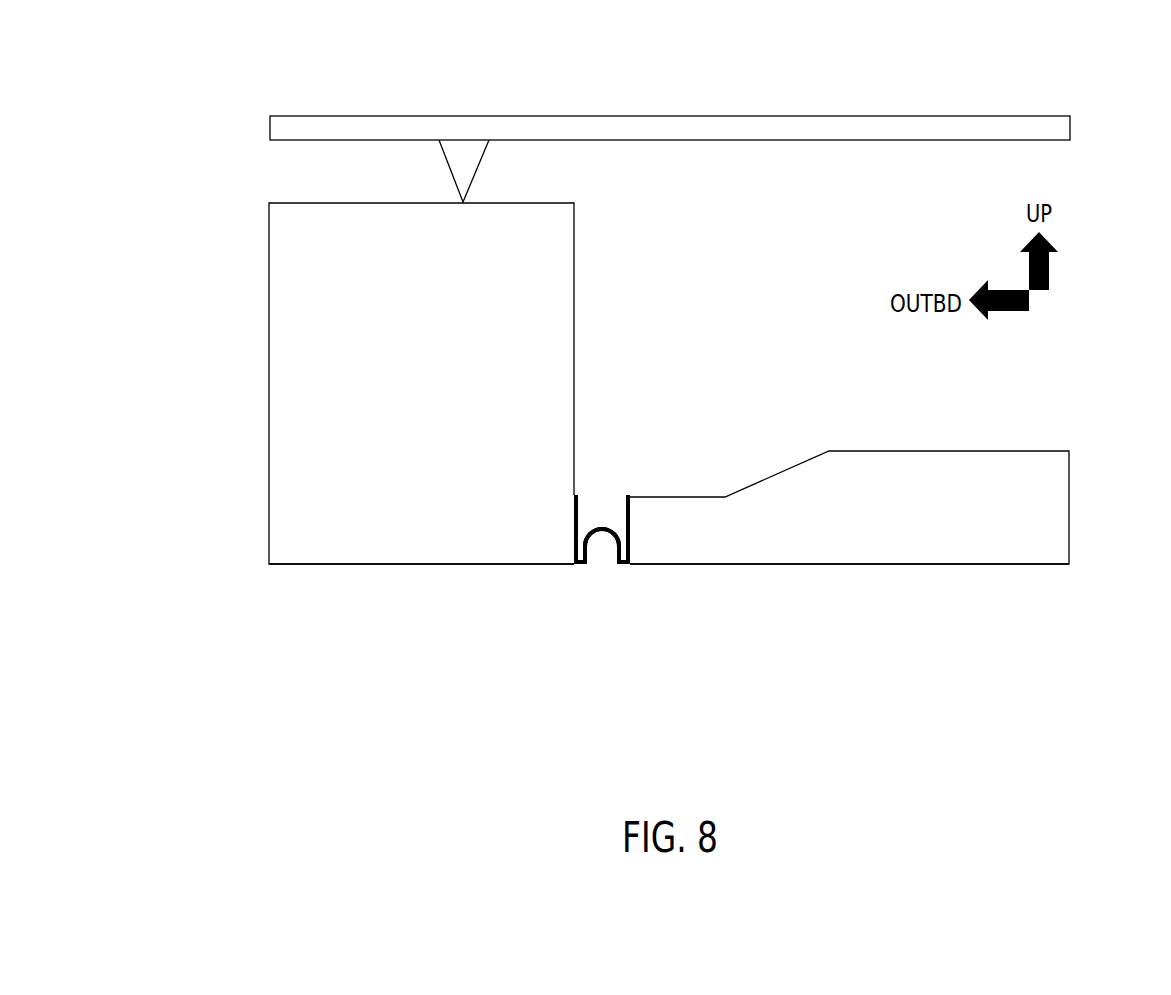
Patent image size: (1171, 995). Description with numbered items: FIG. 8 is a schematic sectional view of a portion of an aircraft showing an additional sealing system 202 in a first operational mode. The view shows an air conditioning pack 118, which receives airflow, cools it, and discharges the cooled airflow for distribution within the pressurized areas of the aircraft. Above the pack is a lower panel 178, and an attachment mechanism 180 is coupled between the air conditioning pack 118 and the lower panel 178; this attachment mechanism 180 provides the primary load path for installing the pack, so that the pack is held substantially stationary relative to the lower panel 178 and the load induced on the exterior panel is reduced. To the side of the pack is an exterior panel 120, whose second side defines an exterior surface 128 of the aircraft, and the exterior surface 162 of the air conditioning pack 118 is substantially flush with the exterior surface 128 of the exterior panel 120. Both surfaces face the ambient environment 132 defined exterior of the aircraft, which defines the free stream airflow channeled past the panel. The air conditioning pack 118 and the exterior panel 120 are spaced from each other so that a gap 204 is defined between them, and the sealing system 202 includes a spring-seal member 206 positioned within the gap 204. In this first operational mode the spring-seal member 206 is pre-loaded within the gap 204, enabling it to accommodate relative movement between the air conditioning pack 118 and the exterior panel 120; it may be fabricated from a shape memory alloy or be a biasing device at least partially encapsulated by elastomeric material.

The lower panel 178 is at (893, 116).
The attachment mechanism 180 is at (480, 166).
The air conditioning pack 118 is at (269, 365).
The exterior surface of air conditioning pack 162 is at (355, 564).
The exterior panel 120 is at (1069, 497).
The exterior surface of aircraft 128 is at (955, 564).
The sealing system 202 is at (640, 423).
The spring-seal member 206 is at (604, 527).
The gap 204 is at (615, 590).
The ambient environment 132 is at (673, 731).